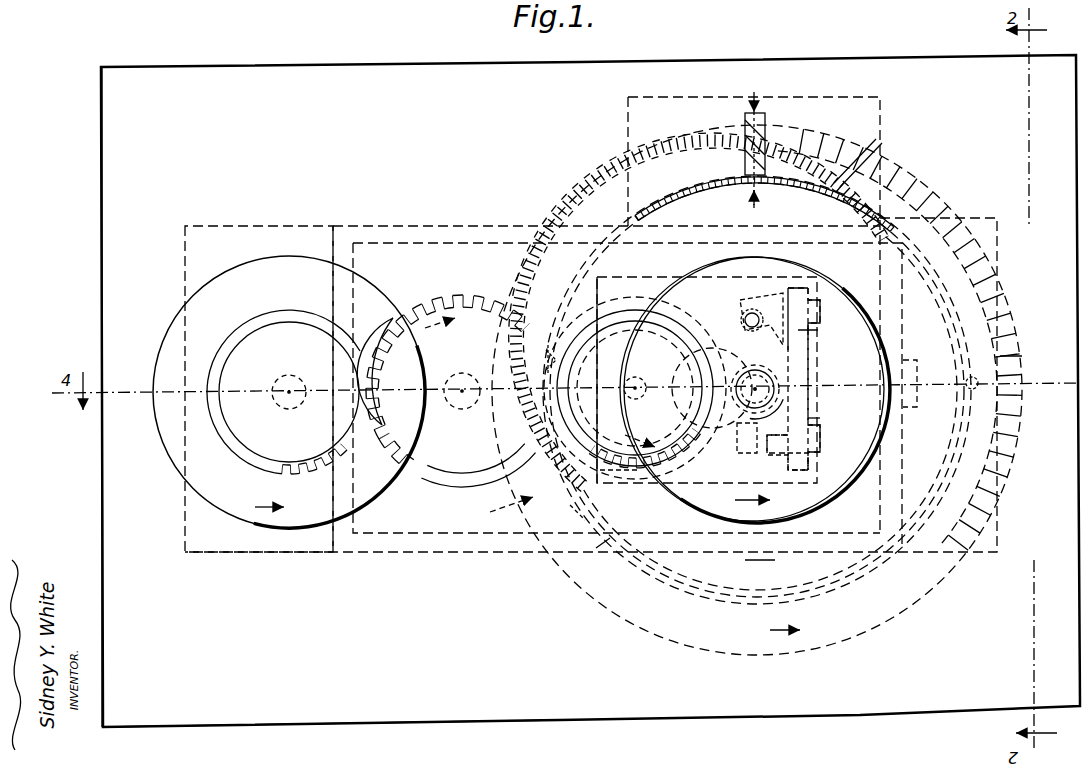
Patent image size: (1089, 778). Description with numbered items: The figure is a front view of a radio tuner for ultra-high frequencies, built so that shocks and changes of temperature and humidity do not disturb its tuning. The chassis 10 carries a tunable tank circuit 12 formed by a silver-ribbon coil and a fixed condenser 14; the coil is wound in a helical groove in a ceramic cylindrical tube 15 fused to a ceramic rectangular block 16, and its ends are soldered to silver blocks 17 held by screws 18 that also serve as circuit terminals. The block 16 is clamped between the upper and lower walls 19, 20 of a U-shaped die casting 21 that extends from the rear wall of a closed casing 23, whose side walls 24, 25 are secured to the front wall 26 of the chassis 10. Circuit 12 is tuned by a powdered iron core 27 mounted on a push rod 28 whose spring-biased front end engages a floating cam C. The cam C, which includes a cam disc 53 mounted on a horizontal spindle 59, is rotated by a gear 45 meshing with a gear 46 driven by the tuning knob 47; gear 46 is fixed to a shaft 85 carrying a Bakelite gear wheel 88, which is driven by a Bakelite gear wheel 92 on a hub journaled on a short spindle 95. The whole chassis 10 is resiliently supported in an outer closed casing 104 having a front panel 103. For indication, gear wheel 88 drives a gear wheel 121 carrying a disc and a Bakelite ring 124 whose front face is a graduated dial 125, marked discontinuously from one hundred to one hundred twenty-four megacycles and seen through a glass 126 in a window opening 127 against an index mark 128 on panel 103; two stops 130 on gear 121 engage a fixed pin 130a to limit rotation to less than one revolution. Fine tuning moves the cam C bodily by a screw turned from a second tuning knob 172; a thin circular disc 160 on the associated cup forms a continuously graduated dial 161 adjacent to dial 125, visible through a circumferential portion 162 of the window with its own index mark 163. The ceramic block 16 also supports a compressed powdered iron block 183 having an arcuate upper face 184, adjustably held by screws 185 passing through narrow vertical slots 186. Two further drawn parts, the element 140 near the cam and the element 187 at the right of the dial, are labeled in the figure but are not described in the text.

The chassis 10 is at (254, 563).
The tunable tank circuit 12 is at (816, 361).
The condenser 14 is at (742, 319).
The cylindrical tube 15 is at (700, 347).
The rectangular block 16 is at (812, 337).
The silver blocks 17 is at (780, 292).
The screws 18 is at (822, 312).
The upper wall 19 is at (802, 280).
The lower wall 20 is at (812, 470).
The die casting 21 is at (678, 496).
The closed casing 23 is at (440, 222).
The side wall 24 is at (333, 278).
The side wall 25 is at (904, 462).
The front wall 26 is at (224, 232).
The powdered iron core 27 is at (780, 384).
The push rod 28 is at (770, 378).
The gear 45 is at (625, 480).
The gear 46 is at (466, 296).
The tuning knob 47 is at (205, 488).
The cam disc 53 is at (558, 500).
The spindle 59 is at (636, 377).
The shaft 85 is at (462, 408).
The gear wheel 88 is at (412, 317).
The gear wheel 92 is at (218, 351).
The spindle 95 is at (286, 378).
The front panel 103 is at (104, 527).
The closed casing 104 is at (94, 456).
The gear wheel 121 is at (546, 358).
The ring 124 is at (563, 207).
The graduated dial 125 is at (942, 196).
The glass 126 is at (882, 156).
The window opening 127 is at (766, 132).
The index mark 128 is at (744, 116).
The stops 130 is at (1012, 358).
The pin 130a is at (962, 380).
The cam 140 is at (706, 387).
The circular disc 160 is at (667, 200).
The graduated dial 161 is at (698, 242).
The circumferentially extending portion 162 is at (727, 214).
The index mark 163 is at (760, 226).
The tuning knob 172 is at (805, 500).
The powdered iron block 183 is at (728, 450).
The arcuate upper face 184 is at (780, 408).
The screws 185 is at (822, 440).
The vertical slots 186 is at (812, 418).
The detent 187 is at (917, 410).
The floating cam C is at (498, 512).